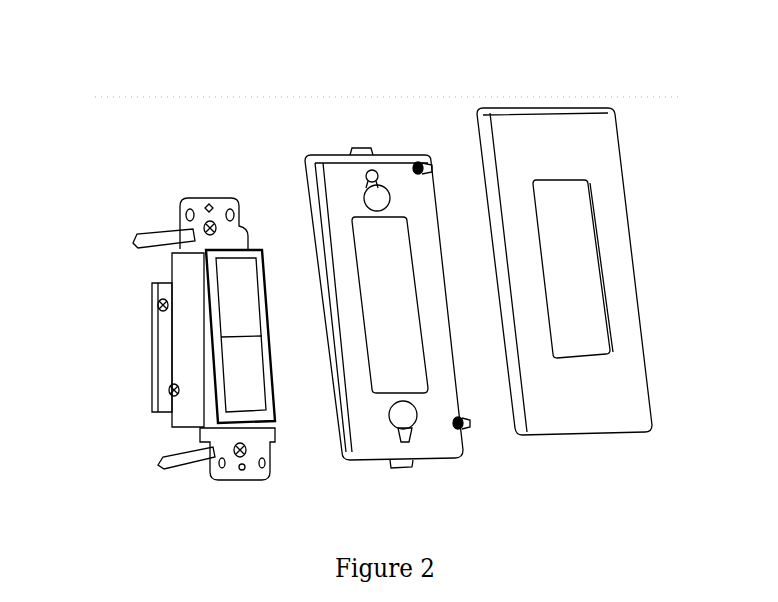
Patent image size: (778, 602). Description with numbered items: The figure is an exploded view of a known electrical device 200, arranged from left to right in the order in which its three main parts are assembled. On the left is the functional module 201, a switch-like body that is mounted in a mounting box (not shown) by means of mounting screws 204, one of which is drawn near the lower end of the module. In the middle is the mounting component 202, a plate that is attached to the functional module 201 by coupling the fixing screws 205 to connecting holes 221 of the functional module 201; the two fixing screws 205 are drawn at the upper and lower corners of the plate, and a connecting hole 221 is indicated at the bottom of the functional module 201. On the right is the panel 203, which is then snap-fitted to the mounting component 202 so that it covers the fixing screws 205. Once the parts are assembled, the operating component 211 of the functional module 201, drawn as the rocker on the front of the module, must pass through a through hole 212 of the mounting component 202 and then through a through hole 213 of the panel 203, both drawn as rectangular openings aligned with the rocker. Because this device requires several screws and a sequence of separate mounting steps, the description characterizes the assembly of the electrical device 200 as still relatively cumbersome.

The electrical device 200 is at (314, 84).
The functional module 201 is at (197, 303).
The mounting component 202 is at (336, 173).
The panel 203 is at (593, 160).
The mounting screws 204 is at (178, 462).
The fixing screws 205 is at (476, 423).
The operating component 211 is at (245, 372).
The through hole 212 is at (368, 248).
The through hole 213 is at (567, 248).
The connecting holes 221 is at (244, 466).